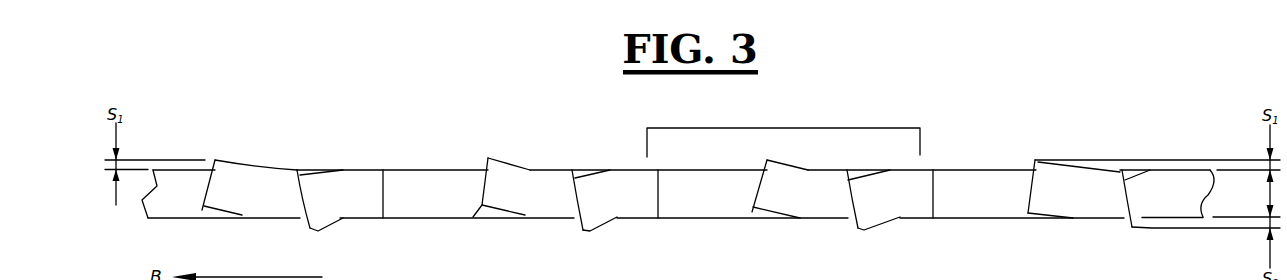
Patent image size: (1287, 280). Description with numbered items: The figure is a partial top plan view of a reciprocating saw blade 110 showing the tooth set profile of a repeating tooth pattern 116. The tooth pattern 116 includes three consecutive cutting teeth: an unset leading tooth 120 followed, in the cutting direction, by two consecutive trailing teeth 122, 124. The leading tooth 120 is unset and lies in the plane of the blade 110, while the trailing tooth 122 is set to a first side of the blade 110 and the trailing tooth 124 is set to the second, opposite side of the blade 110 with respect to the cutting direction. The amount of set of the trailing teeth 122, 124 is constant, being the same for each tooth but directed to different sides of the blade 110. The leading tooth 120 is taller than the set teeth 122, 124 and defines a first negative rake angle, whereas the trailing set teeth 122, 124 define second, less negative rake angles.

The blade 110 is at (1086, 115).
The tooth pattern 116 is at (800, 128).
The leading tooth 120 is at (405, 187).
The trailing tooth 122 is at (232, 196).
The trailing tooth 124 is at (333, 208).